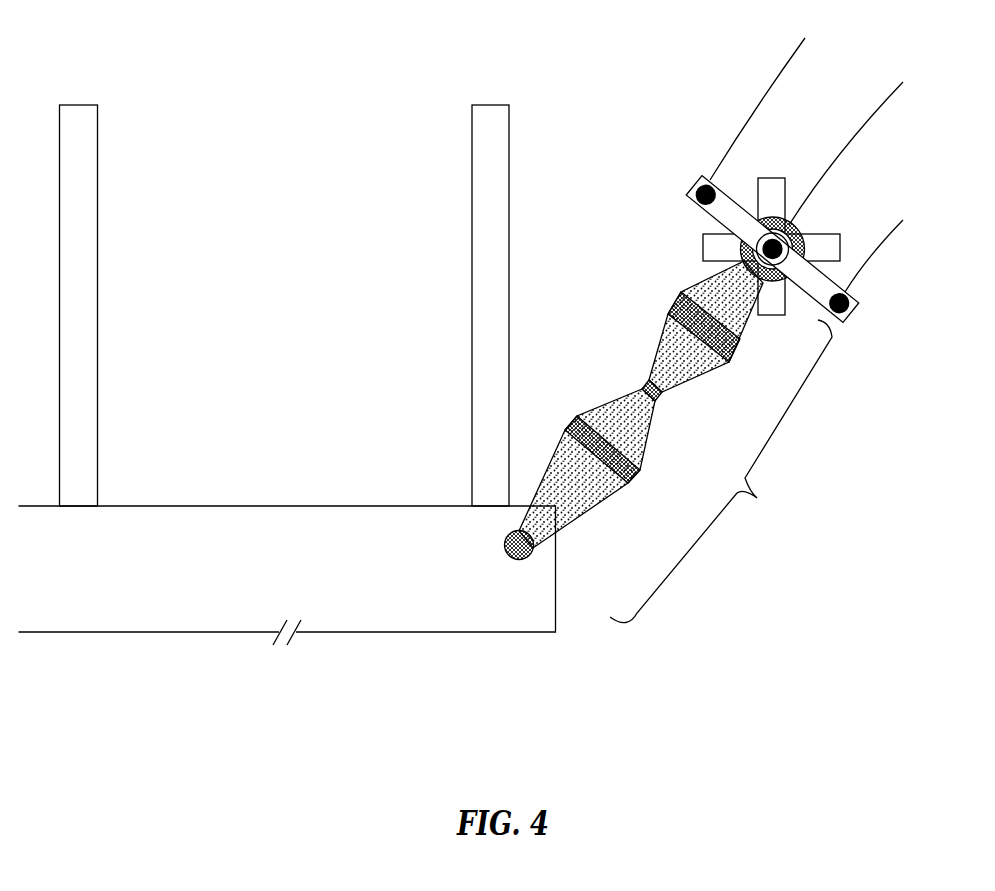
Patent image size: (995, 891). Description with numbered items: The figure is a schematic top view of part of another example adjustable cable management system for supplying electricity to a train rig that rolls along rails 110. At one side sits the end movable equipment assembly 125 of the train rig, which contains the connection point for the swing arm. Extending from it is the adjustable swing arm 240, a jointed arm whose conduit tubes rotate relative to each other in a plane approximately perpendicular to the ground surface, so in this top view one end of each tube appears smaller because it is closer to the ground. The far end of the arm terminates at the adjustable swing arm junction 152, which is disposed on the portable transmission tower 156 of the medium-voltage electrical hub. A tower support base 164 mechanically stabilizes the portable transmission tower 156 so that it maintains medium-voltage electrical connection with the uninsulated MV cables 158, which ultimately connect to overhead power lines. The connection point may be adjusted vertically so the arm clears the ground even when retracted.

The rails 110 is at (472, 288).
The end movable equipment assembly 125 is at (305, 577).
The adjustable swing arm junction 152 is at (776, 285).
The portable transmission tower 156 is at (717, 215).
The uninsulated MV cables 158 is at (878, 246).
The tower support base 164 is at (772, 190).
The adjustable swing arm 240 is at (721, 471).